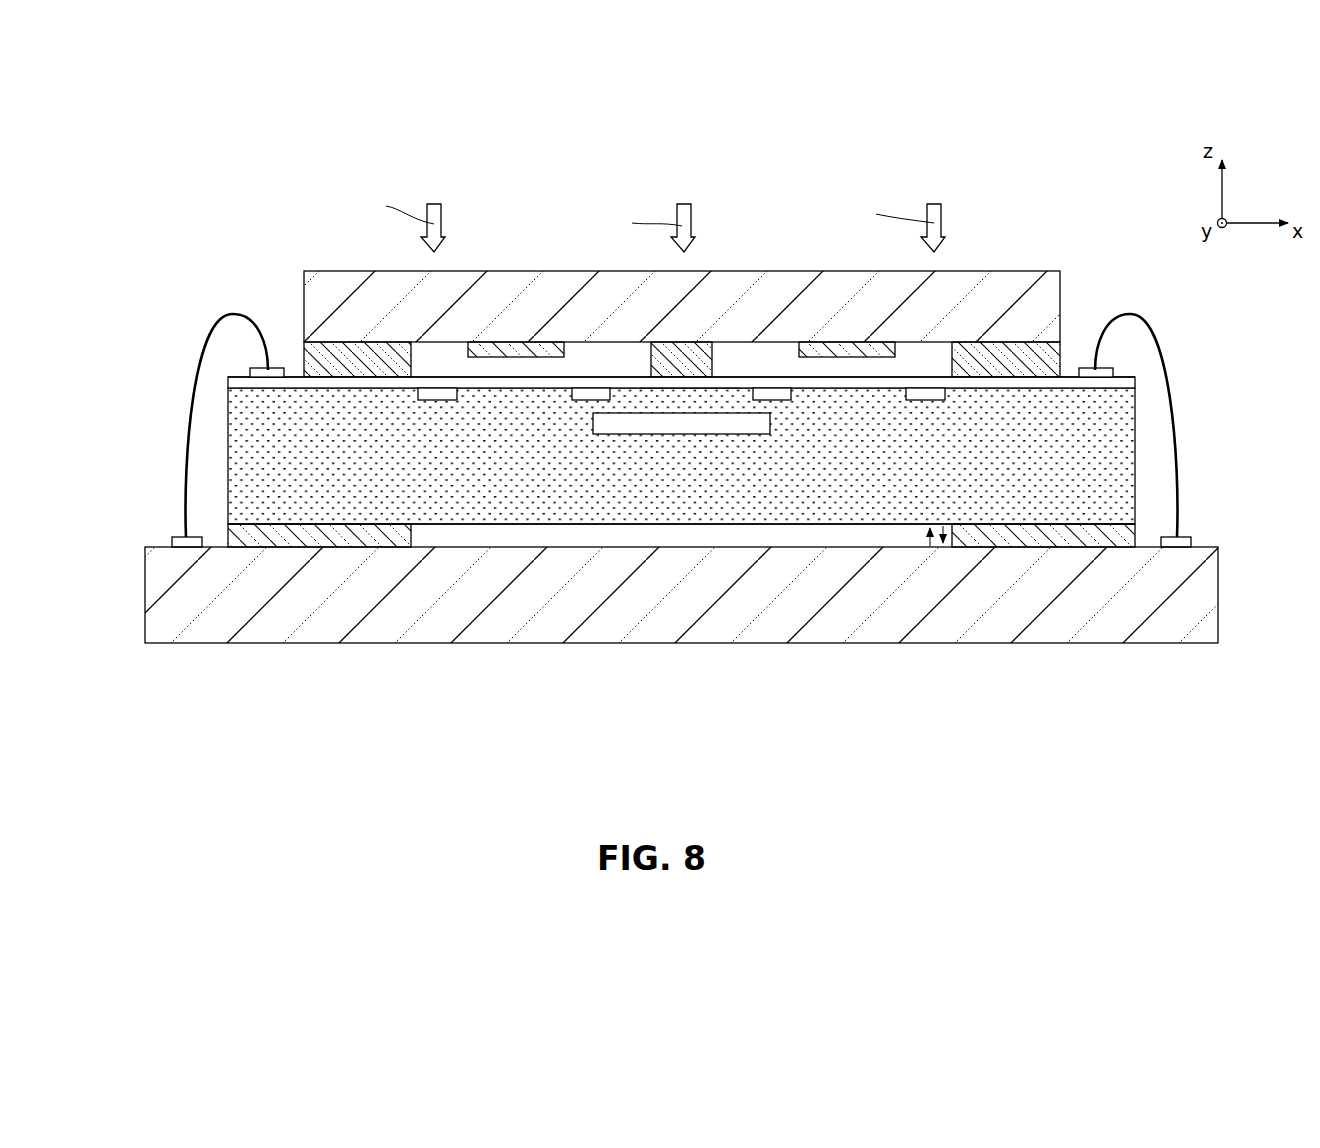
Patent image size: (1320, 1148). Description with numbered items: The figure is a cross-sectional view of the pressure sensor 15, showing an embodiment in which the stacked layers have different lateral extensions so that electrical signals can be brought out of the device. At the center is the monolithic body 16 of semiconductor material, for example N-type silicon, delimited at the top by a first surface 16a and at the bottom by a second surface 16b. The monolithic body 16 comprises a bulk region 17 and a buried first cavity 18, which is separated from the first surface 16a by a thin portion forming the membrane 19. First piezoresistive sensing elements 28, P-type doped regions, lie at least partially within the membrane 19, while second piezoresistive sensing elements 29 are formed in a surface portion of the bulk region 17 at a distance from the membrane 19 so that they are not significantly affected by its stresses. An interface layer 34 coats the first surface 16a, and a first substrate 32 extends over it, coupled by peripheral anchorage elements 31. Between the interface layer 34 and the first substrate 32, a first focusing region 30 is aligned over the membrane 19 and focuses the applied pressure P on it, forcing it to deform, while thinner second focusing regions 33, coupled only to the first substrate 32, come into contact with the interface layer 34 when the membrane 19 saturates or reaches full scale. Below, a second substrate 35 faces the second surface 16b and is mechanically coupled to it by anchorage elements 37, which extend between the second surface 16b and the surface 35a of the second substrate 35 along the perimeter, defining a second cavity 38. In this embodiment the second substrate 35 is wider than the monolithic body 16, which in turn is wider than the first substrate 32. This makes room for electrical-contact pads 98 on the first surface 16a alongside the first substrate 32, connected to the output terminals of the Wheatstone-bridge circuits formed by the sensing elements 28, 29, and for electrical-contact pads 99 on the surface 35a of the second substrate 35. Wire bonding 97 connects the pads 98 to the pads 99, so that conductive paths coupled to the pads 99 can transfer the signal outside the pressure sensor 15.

The pressure sensor 15 is at (280, 196).
The monolithic body 16 is at (681, 470).
The first surface 16a is at (988, 378).
The second surface 16b is at (935, 550).
The bulk region 17 is at (290, 500).
The first cavity 18 is at (648, 428).
The membrane 19 is at (688, 398).
The first piezoresistive sensing elements 28 is at (574, 402).
The second piezoresistive sensing elements 29 is at (432, 402).
The first focusing region 30 is at (686, 358).
The anchorage elements 31 is at (347, 360).
The first substrate 32 is at (512, 286).
The second focusing regions 33 is at (548, 347).
The interface layer 34 is at (768, 385).
The second substrate 35 is at (323, 624).
The surface of the second substrate 35a is at (948, 528).
The anchorage elements 37 is at (380, 542).
The second cavity 38 is at (737, 532).
The wire bonding 97 is at (187, 438).
The electrical-contact pads 98 is at (278, 372).
The electrical-contact pads 99 is at (172, 545).